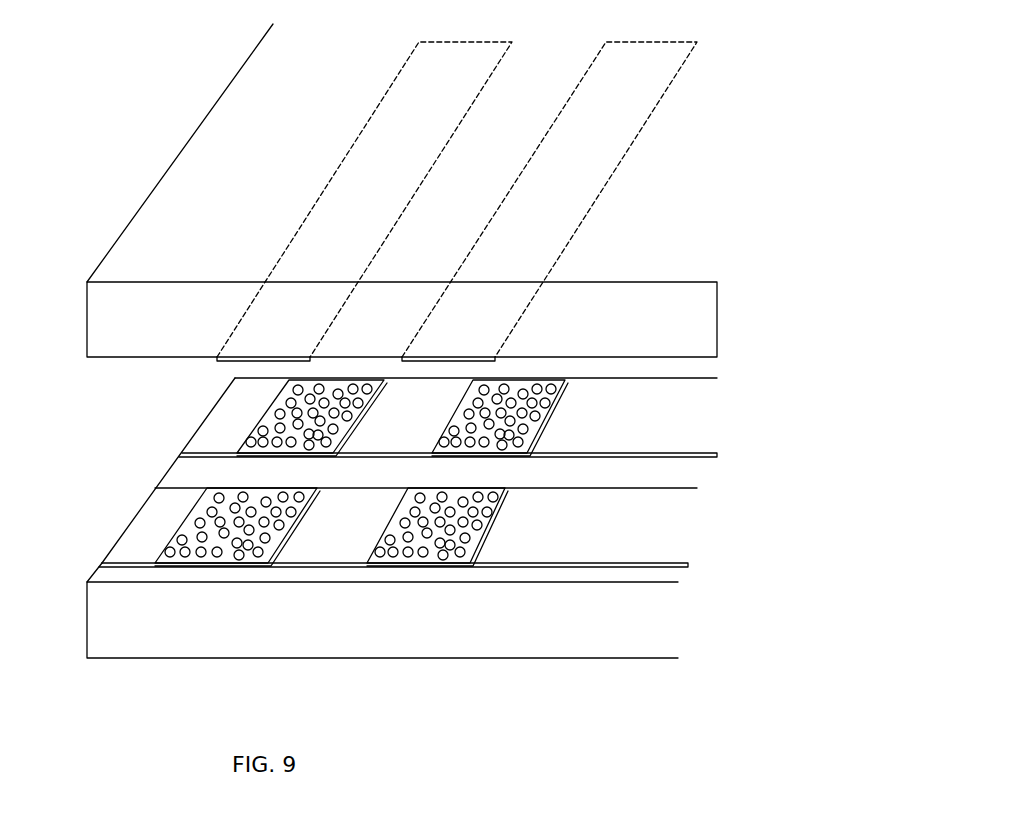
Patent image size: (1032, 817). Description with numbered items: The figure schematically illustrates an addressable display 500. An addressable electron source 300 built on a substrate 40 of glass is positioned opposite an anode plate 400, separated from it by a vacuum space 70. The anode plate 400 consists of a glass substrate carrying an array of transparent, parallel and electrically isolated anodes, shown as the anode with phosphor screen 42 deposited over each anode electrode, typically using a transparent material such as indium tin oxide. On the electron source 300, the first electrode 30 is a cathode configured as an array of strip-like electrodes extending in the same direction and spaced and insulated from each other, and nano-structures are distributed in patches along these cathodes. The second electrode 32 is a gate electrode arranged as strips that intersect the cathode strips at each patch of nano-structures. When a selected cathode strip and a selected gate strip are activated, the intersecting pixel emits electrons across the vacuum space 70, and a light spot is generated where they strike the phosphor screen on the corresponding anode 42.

The anode plate 400 is at (137, 167).
The anode with phosphor screen 42 is at (327, 236).
The display 500 is at (485, 225).
The addressable electron source 300 is at (437, 541).
The vacuum space between electron source and anode 70 is at (416, 488).
The first electrode 30 is at (688, 415).
The second electrode 32 is at (540, 420).
The substrate 40 is at (460, 630).